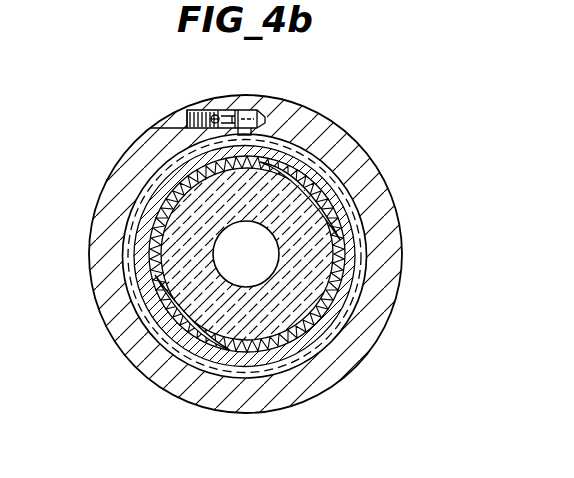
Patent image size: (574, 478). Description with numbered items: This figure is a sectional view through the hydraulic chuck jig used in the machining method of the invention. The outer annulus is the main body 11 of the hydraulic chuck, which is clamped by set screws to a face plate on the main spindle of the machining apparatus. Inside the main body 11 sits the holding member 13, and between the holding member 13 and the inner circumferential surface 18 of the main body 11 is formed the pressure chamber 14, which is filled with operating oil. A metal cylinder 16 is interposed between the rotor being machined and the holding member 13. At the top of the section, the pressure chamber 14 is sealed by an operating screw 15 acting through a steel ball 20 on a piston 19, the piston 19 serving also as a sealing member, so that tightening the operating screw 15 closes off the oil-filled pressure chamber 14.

The main body 11 is at (354, 138).
The holding member 13 is at (146, 364).
The pressure chamber 14 is at (249, 368).
The operating screw 15 is at (187, 112).
The metal cylinder 16 is at (221, 350).
The inner circumferential surface 18 is at (169, 362).
The piston 19 is at (232, 114).
The steel ball 20 is at (215, 115).